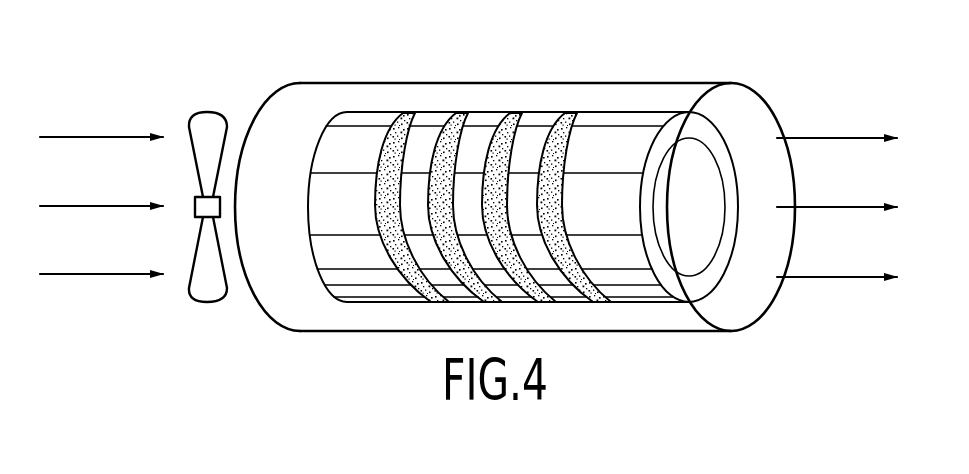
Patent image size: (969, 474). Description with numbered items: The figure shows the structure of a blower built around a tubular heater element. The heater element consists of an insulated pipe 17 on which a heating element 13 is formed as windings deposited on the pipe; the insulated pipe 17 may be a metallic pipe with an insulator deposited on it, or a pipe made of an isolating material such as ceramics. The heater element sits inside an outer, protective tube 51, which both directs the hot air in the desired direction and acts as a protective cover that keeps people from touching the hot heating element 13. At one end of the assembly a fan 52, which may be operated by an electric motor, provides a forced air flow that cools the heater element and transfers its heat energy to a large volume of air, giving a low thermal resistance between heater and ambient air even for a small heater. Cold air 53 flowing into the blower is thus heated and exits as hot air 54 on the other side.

The heating element 13 is at (510, 125).
The insulated pipe 17 is at (368, 118).
The outer protective tube 51 is at (670, 83).
The fan 52 is at (200, 117).
The cold air 53 is at (102, 134).
The hot air 54 is at (833, 138).